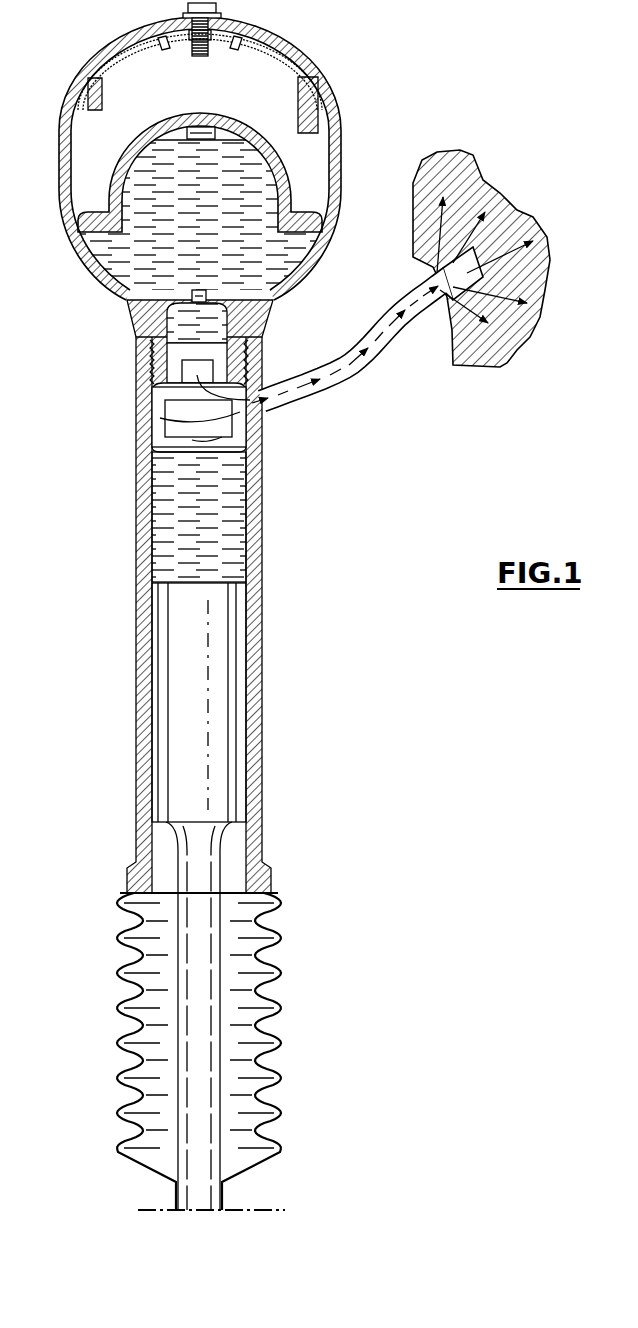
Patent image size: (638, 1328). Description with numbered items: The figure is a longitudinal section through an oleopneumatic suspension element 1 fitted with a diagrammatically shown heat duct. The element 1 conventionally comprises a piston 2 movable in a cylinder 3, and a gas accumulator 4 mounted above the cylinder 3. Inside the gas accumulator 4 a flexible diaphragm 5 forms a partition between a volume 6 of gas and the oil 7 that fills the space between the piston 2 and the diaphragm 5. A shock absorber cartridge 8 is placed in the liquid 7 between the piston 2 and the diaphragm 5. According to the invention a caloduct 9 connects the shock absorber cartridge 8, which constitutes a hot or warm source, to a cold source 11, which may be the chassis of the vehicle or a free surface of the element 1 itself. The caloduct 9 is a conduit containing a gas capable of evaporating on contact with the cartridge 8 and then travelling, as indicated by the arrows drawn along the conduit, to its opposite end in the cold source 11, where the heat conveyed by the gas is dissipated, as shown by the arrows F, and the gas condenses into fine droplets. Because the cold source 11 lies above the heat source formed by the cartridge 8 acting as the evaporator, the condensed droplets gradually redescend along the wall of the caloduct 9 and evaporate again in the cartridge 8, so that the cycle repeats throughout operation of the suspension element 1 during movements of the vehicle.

The oleopneumatic suspension element 1 is at (263, 564).
The piston 2 is at (217, 695).
The cylinder 3 is at (252, 608).
The gas accumulator 4 is at (68, 98).
The flexible diaphragm 5 is at (76, 262).
The volume of gas 6 is at (143, 93).
The oil 7 is at (178, 503).
The shock absorber cartridge 8 is at (163, 423).
The caloduct 9 is at (340, 384).
The cold source 11 is at (510, 360).
The arrows F is at (480, 257).